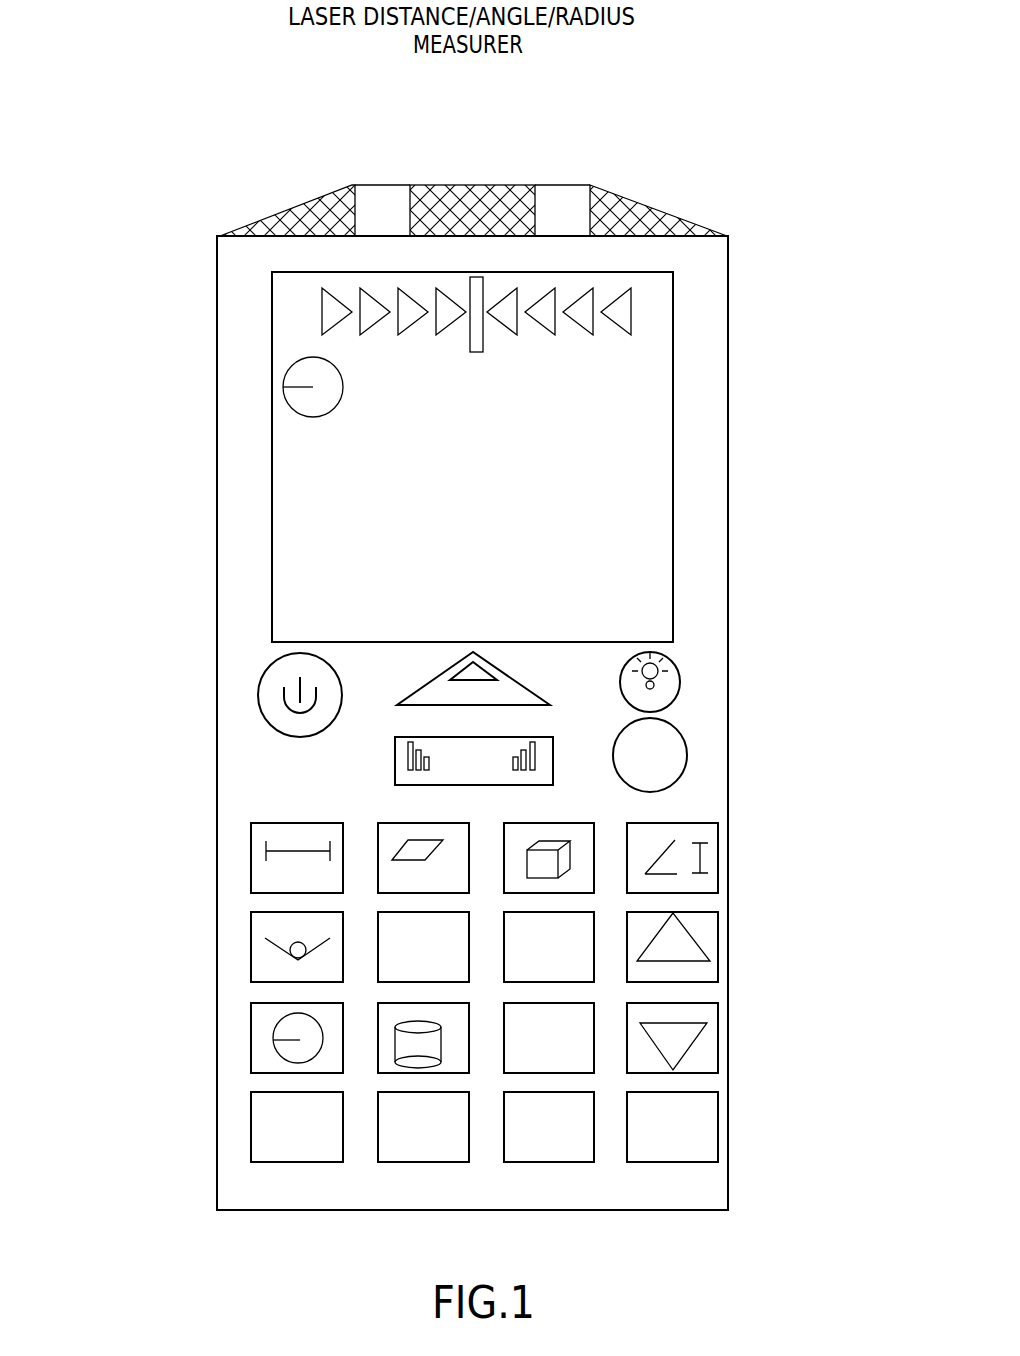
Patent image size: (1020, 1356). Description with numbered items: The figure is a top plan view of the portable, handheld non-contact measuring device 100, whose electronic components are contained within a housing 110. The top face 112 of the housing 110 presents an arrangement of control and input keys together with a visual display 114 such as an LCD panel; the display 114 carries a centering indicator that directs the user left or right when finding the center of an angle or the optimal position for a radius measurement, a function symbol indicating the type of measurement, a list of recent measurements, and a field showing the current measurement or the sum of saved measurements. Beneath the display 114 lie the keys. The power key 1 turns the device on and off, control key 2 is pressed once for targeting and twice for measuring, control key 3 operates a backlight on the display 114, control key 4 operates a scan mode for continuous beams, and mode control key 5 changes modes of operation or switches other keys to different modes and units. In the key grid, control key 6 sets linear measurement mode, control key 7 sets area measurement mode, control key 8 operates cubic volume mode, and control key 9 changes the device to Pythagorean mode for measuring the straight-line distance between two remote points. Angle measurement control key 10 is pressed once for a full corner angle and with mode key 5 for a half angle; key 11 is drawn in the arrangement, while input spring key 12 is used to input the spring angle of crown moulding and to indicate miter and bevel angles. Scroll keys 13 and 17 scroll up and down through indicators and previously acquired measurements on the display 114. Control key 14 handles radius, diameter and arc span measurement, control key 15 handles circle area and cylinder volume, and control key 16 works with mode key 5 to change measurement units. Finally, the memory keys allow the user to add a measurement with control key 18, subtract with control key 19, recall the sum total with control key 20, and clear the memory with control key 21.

The handheld non-contact measuring device 100 is at (203, 258).
The housing 110 is at (204, 385).
The top face 112 is at (280, 762).
The visual display 114 is at (307, 467).
The power key 1 is at (296, 694).
The control key 2 is at (473, 678).
The control key 3 is at (639, 681).
The control key 4 is at (460, 749).
The mode control key 5 is at (642, 752).
The control key 6 is at (285, 846).
The control key 7 is at (411, 846).
The control key 8 is at (536, 846).
The control key 9 is at (659, 846).
The angle measurement control key 10 is at (283, 935).
The input spring key 11 is at (409, 935).
The input spring key / bevel/miter control key 12 is at (535, 935).
The scroll key 13 is at (659, 935).
The control key 14 is at (283, 1025).
The control key 15 is at (409, 1025).
The control key 16 is at (535, 1025).
The scroll key 17 is at (659, 1025).
The control key 18 is at (284, 1115).
The control key 19 is at (409, 1115).
The control key 20 is at (535, 1115).
The control key 21 is at (659, 1115).